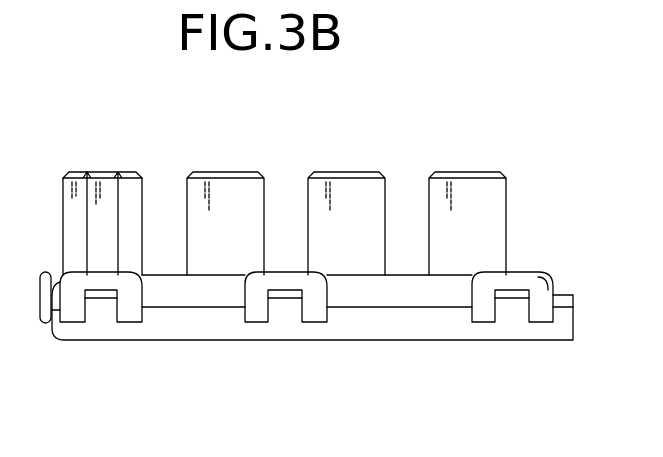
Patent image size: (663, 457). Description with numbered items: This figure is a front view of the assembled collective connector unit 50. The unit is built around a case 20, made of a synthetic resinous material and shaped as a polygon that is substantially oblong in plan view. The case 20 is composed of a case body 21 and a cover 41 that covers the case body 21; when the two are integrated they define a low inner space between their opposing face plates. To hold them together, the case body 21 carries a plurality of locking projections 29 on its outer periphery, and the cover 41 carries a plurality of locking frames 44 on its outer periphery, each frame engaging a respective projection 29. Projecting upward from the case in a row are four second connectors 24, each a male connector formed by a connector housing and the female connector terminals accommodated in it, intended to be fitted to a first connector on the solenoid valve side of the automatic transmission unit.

The case 20 is at (353, 390).
The case body 21 is at (374, 294).
The cover 41 is at (417, 320).
The second connector 24 is at (130, 172).
The locking projection 29 is at (103, 300).
The locking frame 44 is at (76, 313).
The collective connector unit 50 is at (530, 182).